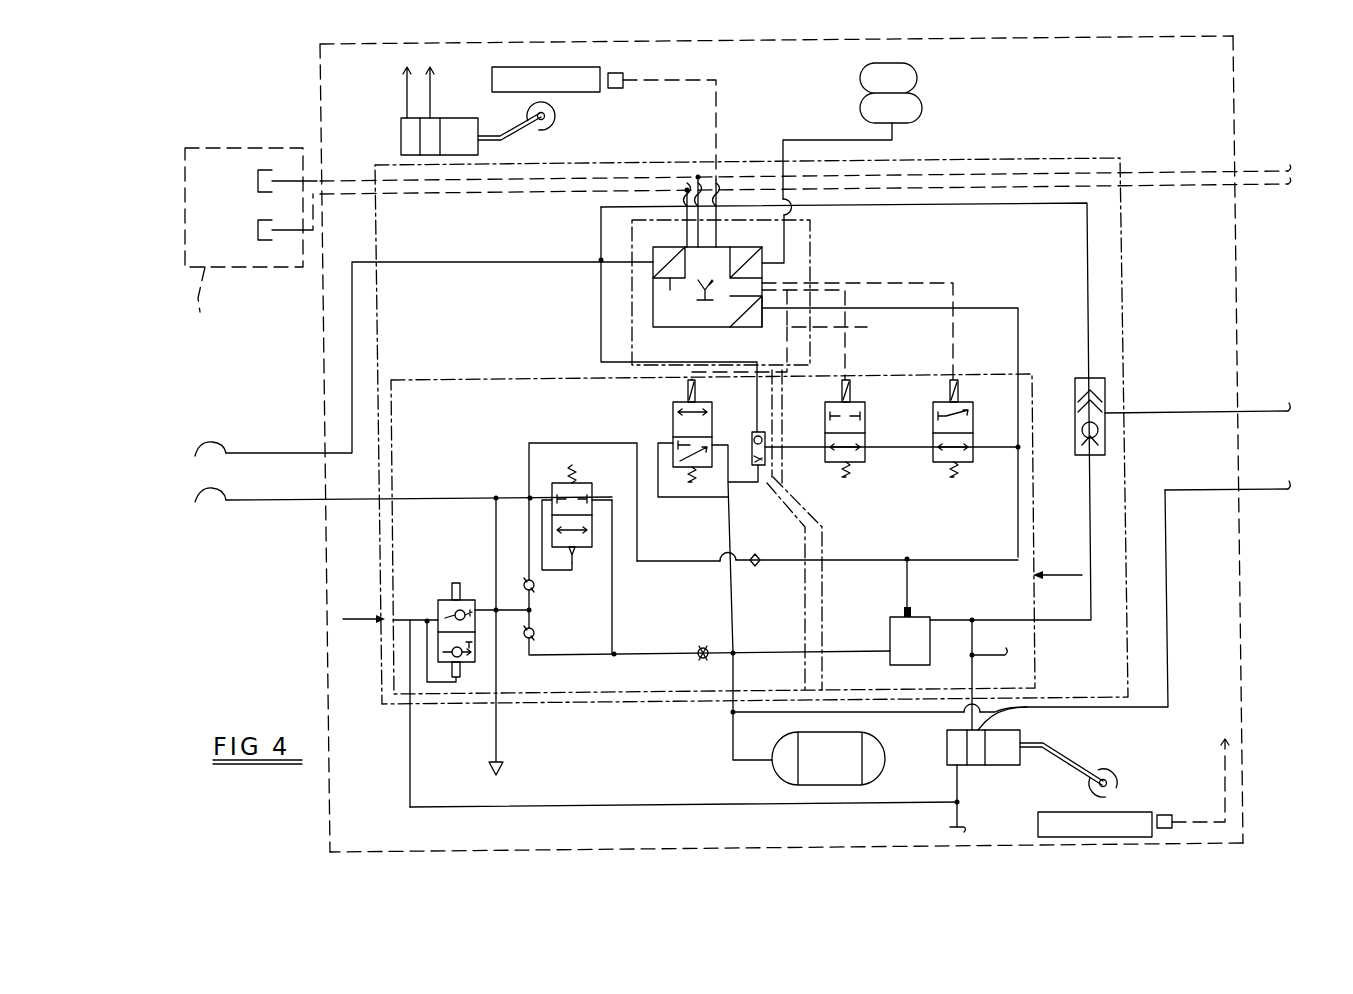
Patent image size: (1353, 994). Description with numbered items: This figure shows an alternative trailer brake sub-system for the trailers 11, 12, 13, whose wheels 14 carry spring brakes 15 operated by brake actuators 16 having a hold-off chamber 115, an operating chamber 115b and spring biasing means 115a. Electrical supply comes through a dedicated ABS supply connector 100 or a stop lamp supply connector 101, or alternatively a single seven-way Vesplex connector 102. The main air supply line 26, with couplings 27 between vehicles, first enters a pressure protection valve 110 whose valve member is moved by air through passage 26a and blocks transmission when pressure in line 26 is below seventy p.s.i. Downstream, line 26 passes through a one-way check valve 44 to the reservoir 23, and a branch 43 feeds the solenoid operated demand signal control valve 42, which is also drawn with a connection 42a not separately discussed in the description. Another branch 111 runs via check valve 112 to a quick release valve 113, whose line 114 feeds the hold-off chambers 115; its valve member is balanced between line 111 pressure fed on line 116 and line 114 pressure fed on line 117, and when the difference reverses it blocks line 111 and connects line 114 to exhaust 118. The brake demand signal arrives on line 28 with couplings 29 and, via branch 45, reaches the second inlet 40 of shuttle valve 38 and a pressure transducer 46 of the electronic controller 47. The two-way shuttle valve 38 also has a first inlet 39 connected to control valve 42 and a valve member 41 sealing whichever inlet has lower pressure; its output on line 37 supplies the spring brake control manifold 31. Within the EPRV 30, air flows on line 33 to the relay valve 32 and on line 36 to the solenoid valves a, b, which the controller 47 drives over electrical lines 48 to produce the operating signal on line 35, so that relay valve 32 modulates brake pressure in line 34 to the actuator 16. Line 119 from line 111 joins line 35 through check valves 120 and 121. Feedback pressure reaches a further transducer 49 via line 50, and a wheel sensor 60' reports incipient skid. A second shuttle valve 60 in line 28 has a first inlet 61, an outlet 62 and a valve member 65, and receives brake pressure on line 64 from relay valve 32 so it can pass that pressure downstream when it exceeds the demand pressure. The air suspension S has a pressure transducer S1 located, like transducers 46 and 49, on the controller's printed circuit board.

The first trailer 11 is at (1238, 88).
The second trailer 12 is at (1238, 439).
The rearmost trailer 13 is at (786, 847).
The wheels 14 is at (600, 92).
The brakes 15 is at (565, 117).
The brake actuator 16 is at (399, 135).
The reservoir 23 is at (886, 772).
The main air supply line 26 is at (280, 503).
The passage 26a is at (556, 571).
The couplings 27 is at (205, 502).
The demand signal supply line 28 is at (283, 452).
The couplings 29 is at (222, 450).
The EPRV 30 is at (751, 431).
The spring brake control manifold 31 is at (684, 534).
The relay valve 32 is at (915, 612).
The line 33 is at (890, 652).
The line 34 is at (431, 102).
The line 35 is at (966, 560).
The line 36 is at (808, 450).
The line 37 is at (773, 447).
The shuttle valve 38 is at (752, 415).
The first inlet 39 is at (788, 492).
The second inlet 40 is at (752, 445).
The valve member 41 is at (765, 440).
The demand signal control valve 42 is at (673, 405).
The pilot line 42a is at (865, 334).
The branch 43 is at (682, 500).
The one-way check valve 44 is at (700, 646).
The branch 45 is at (612, 258).
The pressure transducer 46 is at (678, 280).
The electronic control unit 47 is at (710, 328).
The electrical lines 48 is at (848, 297).
The pressure transducer 49 is at (762, 328).
The line 50 is at (1018, 308).
The second shuttle valve 60 is at (1133, 401).
The sensor 60' is at (918, 436).
The first inlet 61 is at (1092, 378).
The outlet 62 is at (1107, 415).
The line 64 is at (1090, 532).
The valve member 65 is at (1100, 442).
The ISO7638 connector 100 is at (268, 170).
The connector 101 is at (264, 243).
The seven-way Vesplex connector 102 is at (226, 300).
The in line valve 110 is at (588, 483).
The branch 111 is at (532, 656).
The one-way check valve 112 is at (535, 633).
The quick release valve 113 is at (441, 597).
The line 114 is at (407, 105).
The hold-off chamber 115 is at (405, 130).
The spring biasing means 115a is at (460, 148).
The operating chamber 115b is at (430, 148).
The line 116 is at (457, 583).
The line 117 is at (448, 683).
The exhaust 118 is at (500, 757).
The line 119 is at (577, 443).
The one-way check valve 120 is at (526, 582).
The one-way check valve 121 is at (762, 566).
The air suspension S is at (918, 80).
The pressure transducer S1 is at (762, 257).
The solenoid valve a is at (845, 446).
The solenoid valve b is at (953, 446).